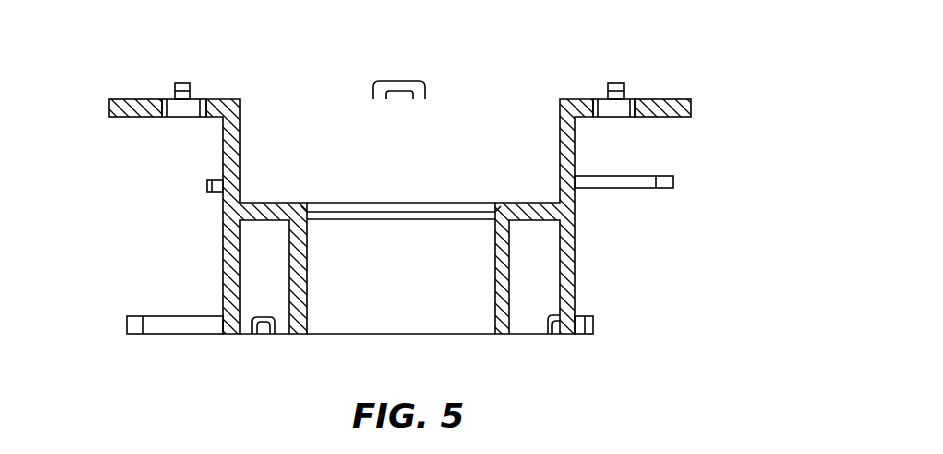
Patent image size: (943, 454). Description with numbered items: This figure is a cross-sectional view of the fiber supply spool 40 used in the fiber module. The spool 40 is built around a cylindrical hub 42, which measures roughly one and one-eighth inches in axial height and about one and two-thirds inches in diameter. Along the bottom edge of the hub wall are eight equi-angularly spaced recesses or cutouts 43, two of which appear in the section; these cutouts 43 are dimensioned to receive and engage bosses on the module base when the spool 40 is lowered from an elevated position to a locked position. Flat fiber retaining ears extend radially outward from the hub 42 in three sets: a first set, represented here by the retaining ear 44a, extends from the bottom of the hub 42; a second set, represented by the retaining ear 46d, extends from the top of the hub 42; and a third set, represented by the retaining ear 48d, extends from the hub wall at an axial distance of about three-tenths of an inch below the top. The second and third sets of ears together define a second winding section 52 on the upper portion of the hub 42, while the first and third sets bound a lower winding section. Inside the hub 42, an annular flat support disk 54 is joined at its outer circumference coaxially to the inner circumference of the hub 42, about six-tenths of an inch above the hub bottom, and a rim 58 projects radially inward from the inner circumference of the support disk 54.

The fiber supply spool 40 is at (424, 205).
The cylindrical hub 42 is at (575, 258).
The cutouts 43 is at (258, 335).
The fiber retaining ear 44a is at (175, 335).
The fiber retaining ear 46d is at (668, 117).
The fiber retaining ear 48d is at (663, 188).
The second winding section 52 is at (103, 120).
The annular flat support disk 54 is at (103, 223).
The rim 58 is at (310, 203).